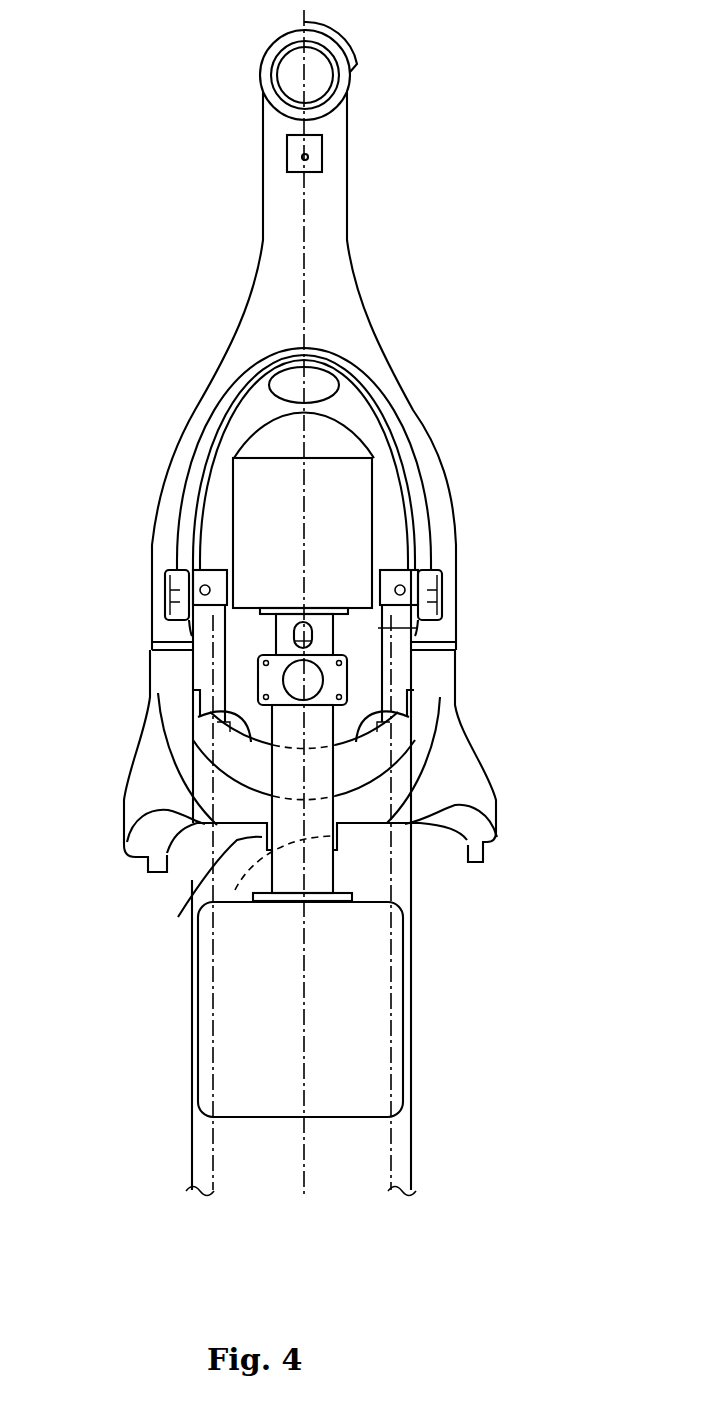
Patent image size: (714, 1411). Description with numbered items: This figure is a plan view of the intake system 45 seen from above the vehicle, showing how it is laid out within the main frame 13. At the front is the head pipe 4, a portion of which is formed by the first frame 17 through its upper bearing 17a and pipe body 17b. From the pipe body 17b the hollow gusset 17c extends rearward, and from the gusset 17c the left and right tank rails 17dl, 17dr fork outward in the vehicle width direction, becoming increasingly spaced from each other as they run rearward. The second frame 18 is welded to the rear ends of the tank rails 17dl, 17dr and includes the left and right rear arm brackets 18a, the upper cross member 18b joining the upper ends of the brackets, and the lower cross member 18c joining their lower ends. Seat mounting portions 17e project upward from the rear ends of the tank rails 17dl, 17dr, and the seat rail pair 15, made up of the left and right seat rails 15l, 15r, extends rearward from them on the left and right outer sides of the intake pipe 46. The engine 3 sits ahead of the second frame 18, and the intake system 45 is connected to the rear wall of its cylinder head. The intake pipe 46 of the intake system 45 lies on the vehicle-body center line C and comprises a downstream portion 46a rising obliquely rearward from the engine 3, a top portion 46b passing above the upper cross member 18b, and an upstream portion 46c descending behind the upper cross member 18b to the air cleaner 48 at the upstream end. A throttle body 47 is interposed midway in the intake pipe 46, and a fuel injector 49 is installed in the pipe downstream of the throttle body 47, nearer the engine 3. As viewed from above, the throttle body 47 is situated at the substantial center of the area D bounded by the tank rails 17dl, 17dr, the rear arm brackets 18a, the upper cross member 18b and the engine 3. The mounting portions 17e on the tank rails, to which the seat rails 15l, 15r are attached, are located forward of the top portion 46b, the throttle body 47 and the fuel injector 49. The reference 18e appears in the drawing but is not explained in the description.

The engine 3 is at (383, 503).
The head pipe 4 is at (258, 54).
The main frame 13 is at (243, 240).
The seat rail pair 15 is at (190, 1080).
The left seat rail 15l is at (185, 1010).
The right seat rail 15r is at (410, 978).
The first frame 17 is at (425, 401).
The upper bearing 17a is at (354, 81).
The pipe body 17b is at (350, 103).
The gusset 17c is at (350, 222).
The left tank rail 17dl is at (148, 545).
The right tank rail 17dr is at (462, 518).
The seat mounting portion 17e is at (163, 582).
The second frame 18 is at (478, 756).
The rear arm bracket 18a is at (128, 790).
The upper cross member 18b is at (190, 882).
The lower cross member 18c is at (208, 712).
The recess 18e is at (192, 908).
The intake system 45 is at (243, 675).
The intake pipe 46 is at (340, 771).
The downstream portion 46a is at (415, 735).
The top portion 46b is at (380, 832).
The upstream portion 46c is at (333, 875).
The throttle body 47 is at (347, 683).
The air cleaner 48 is at (403, 1047).
The fuel injector 49 is at (312, 633).
The vehicle-body center line C is at (301, 1176).
The area D is at (418, 628).